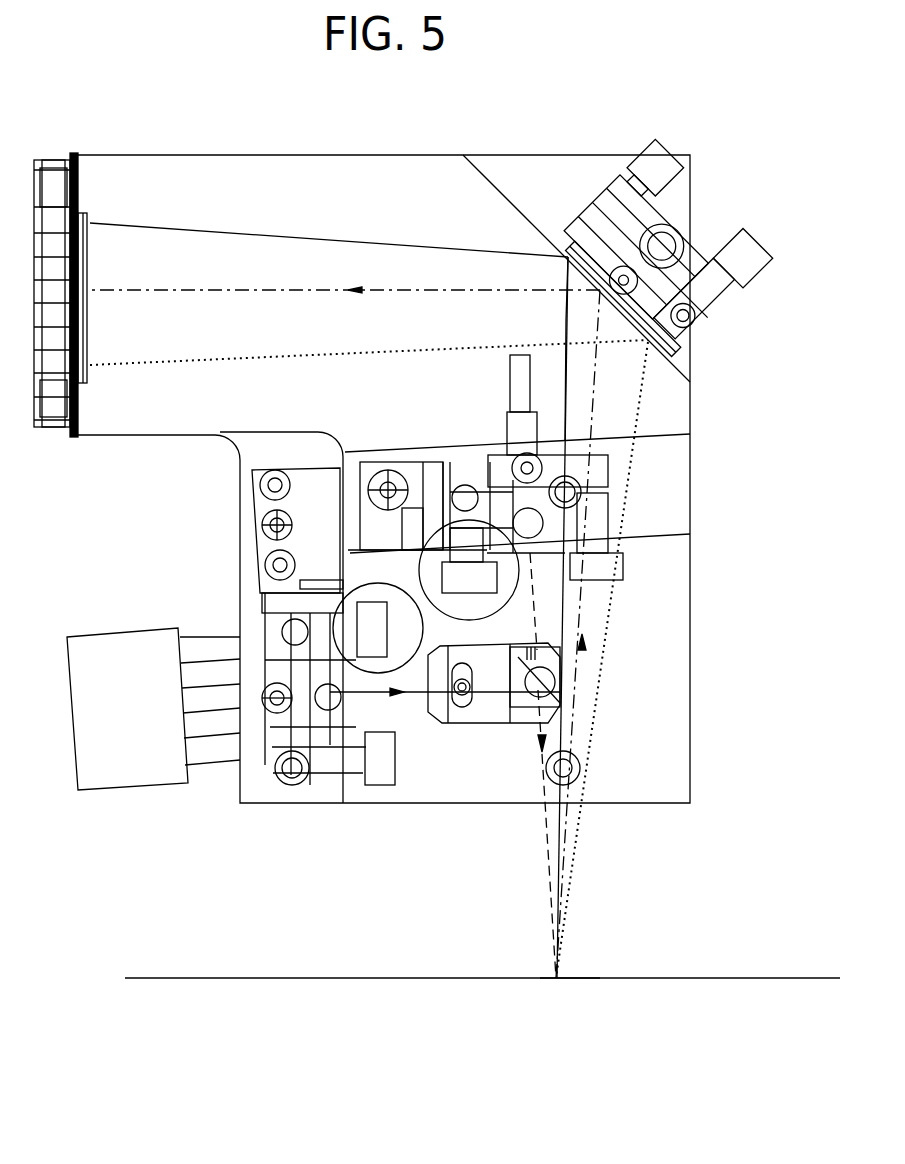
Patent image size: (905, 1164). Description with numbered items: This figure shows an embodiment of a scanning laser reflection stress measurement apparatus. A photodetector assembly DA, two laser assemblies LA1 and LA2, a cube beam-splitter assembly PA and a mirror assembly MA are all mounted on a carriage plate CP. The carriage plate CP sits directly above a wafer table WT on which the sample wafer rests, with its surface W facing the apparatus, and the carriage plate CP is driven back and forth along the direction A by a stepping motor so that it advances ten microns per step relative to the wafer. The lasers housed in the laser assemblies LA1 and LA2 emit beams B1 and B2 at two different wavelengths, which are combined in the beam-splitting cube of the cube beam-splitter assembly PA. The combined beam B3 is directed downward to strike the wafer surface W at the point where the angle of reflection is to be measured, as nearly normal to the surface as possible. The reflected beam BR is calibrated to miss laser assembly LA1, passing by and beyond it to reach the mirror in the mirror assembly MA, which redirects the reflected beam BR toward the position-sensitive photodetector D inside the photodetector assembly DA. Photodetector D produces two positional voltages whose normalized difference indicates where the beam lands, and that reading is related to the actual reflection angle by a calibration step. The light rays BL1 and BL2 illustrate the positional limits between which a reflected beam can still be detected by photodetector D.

The photodetector assembly DA is at (60, 126).
The position-sensitive photodetector D is at (88, 212).
The carriage plate CP is at (544, 155).
The reflected beam BR is at (413, 287).
The light ray BL1 is at (652, 400).
The light ray BL2 is at (565, 318).
The mirror assembly MA is at (722, 334).
The laser assembly LA1 is at (177, 814).
The laser assembly LA2 is at (484, 439).
The laser beam B1 is at (378, 694).
The laser beam B2 is at (532, 600).
The combined beam B3 is at (546, 835).
The cube beam-splitter assembly PA is at (489, 740).
The wafer surface W is at (593, 978).
The wafer table WT is at (245, 978).
The direction of movement A is at (585, 1131).